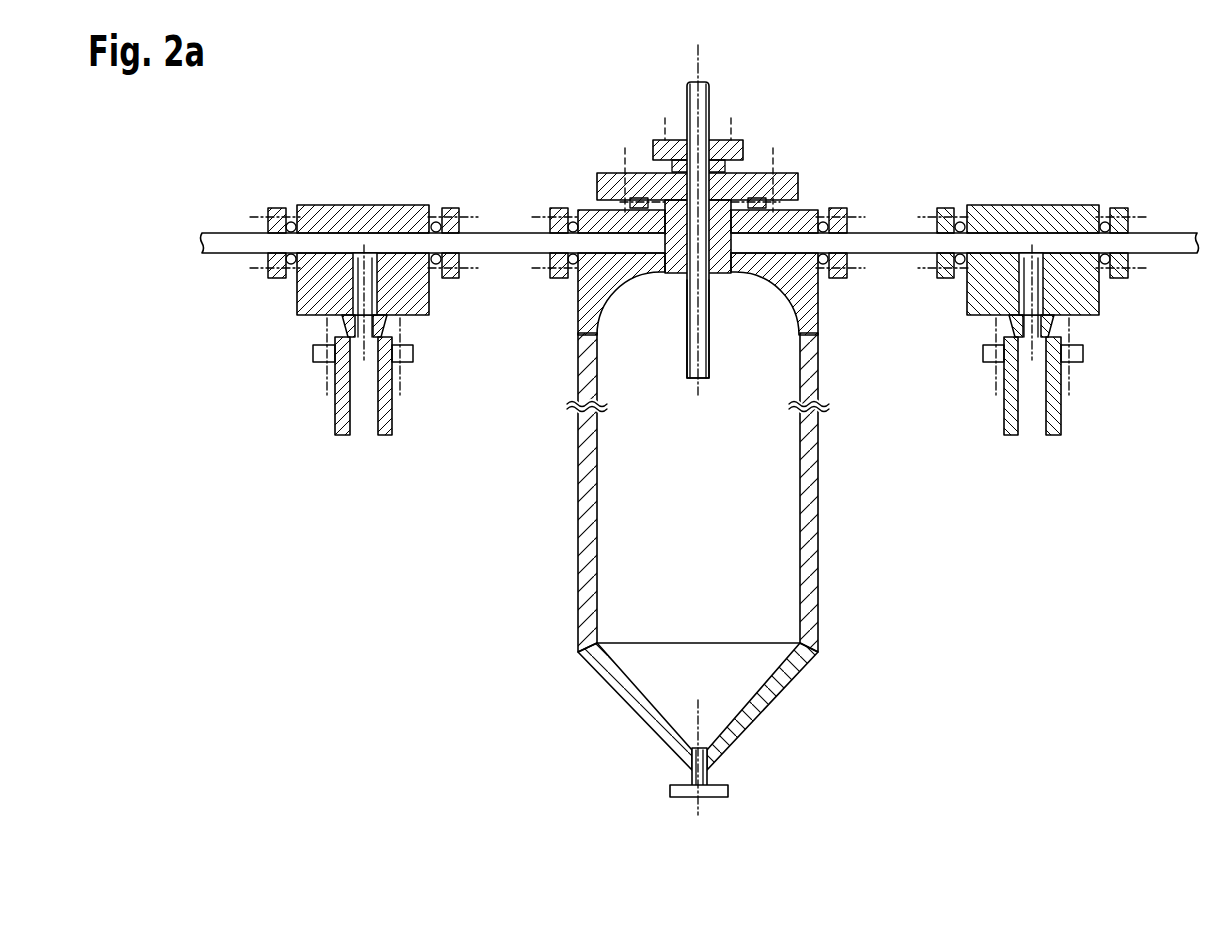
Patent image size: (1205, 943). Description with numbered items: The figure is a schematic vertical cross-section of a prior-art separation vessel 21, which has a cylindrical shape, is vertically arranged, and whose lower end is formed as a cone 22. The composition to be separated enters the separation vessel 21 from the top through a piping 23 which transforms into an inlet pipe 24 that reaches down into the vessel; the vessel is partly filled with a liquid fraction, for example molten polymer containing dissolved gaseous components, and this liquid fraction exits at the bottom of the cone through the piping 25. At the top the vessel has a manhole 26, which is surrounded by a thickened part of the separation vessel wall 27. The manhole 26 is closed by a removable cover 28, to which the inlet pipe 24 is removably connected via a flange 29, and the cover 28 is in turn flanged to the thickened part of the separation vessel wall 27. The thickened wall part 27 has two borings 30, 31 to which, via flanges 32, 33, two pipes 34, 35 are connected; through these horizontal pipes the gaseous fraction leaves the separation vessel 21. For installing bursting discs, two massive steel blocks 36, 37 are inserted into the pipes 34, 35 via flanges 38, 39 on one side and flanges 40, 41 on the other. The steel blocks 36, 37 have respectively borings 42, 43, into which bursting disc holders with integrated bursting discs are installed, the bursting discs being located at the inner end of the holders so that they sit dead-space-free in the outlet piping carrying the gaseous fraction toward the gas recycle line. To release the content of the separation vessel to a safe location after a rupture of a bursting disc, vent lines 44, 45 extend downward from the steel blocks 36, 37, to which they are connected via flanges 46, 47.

The separation vessel 21 is at (805, 523).
The cone 22 is at (762, 702).
The piping 23 is at (707, 97).
The inlet pipe 24 is at (710, 360).
The piping 25 is at (704, 780).
The manhole 26 is at (678, 262).
The thickened part of the separation vessel wall 27 is at (758, 262).
The removable cover 28 is at (741, 170).
The flange 29 is at (658, 156).
The boring 30 is at (612, 245).
The boring 31 is at (787, 245).
The flange 32 is at (560, 225).
The flange 33 is at (838, 211).
The pipe 34 is at (218, 243).
The pipe 35 is at (892, 245).
The steel block 36 is at (355, 207).
The steel block 37 is at (1040, 207).
The flange 38 is at (276, 210).
The flange 39 is at (450, 210).
The flange 40 is at (945, 210).
The flange 41 is at (1124, 210).
The boring 42 is at (377, 293).
The boring 43 is at (1022, 293).
The vent line 44 is at (393, 413).
The vent line 45 is at (1005, 410).
The flange 46 is at (320, 352).
The flange 47 is at (1076, 355).